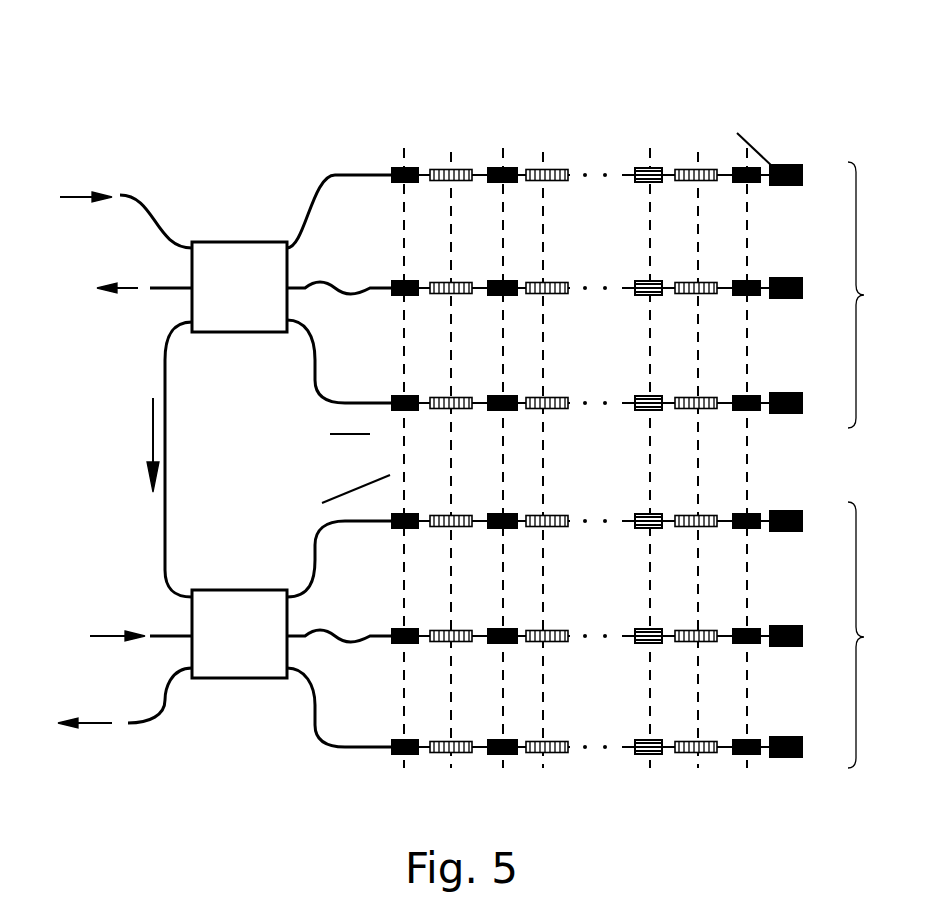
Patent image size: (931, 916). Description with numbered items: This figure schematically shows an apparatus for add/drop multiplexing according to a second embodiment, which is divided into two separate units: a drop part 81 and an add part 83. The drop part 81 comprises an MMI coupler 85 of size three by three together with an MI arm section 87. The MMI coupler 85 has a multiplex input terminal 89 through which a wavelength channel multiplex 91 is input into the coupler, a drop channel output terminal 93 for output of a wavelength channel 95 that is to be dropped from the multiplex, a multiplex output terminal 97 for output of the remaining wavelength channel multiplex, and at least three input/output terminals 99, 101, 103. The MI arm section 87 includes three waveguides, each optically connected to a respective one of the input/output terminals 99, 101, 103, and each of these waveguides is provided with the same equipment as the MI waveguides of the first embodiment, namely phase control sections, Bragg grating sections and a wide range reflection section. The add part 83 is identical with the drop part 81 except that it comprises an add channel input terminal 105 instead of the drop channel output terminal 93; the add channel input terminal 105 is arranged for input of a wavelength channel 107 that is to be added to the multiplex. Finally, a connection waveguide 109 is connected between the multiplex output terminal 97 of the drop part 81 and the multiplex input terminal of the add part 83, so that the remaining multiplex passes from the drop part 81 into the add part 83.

The drop part 81 is at (644, 295).
The add part 83 is at (644, 635).
The MMI coupler 85 is at (240, 242).
The MI arm section 87 is at (345, 92).
The multiplex input terminal 89 is at (175, 247).
The wavelength channel multiplex 91 is at (75, 202).
The drop channel output terminal 93 is at (187, 285).
The wavelength channel 95 is at (125, 273).
The multiplex output terminal 97 is at (192, 318).
The input/output terminal 99 is at (290, 243).
The input/output terminal 101 is at (290, 270).
The input/output terminal 103 is at (290, 308).
The add channel input terminal 105 is at (188, 633).
The wavelength channel 107 is at (102, 634).
The connection waveguide 109 is at (163, 368).